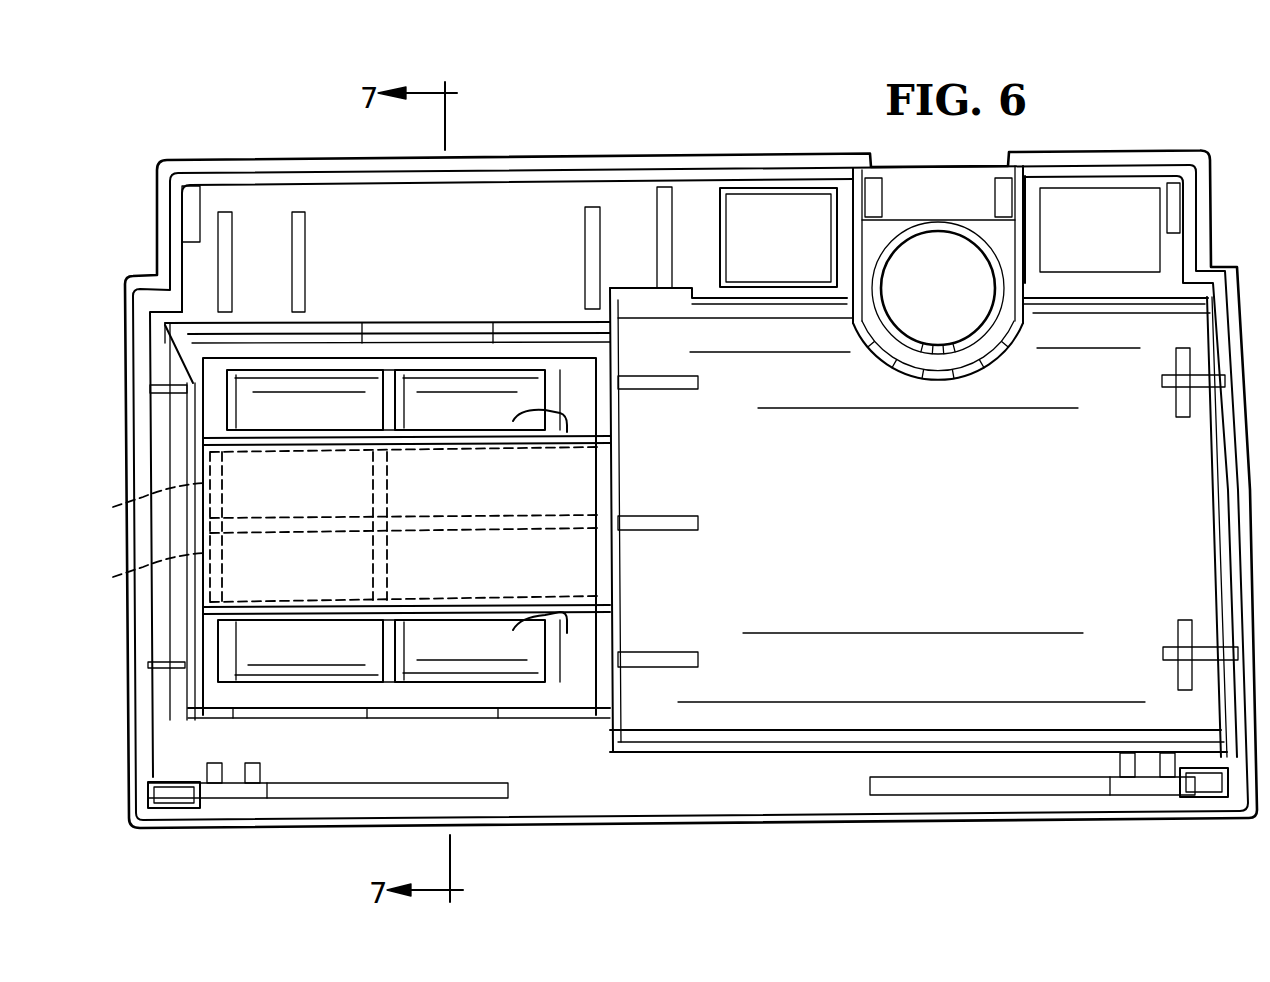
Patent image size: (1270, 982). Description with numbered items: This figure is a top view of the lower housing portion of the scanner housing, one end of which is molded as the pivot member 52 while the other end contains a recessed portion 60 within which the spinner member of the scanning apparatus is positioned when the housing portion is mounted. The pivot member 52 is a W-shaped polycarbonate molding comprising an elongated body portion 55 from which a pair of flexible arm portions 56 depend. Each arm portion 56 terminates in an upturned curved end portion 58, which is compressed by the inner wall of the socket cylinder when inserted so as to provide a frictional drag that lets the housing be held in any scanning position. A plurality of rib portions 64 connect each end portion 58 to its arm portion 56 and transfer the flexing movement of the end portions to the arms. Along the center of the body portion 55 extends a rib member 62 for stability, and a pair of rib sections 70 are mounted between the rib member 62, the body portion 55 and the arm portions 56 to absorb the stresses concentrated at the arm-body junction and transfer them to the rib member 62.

The pivot member 52 is at (200, 592).
The elongated body portion 55 is at (573, 490).
The flexible arm portions 56 is at (567, 416).
The upturned curved end portion 58 is at (420, 362).
The recessed portion 60 is at (780, 720).
The rib member 62 is at (258, 528).
The rib portions 64 is at (553, 390).
The rib sections 70 is at (392, 490).